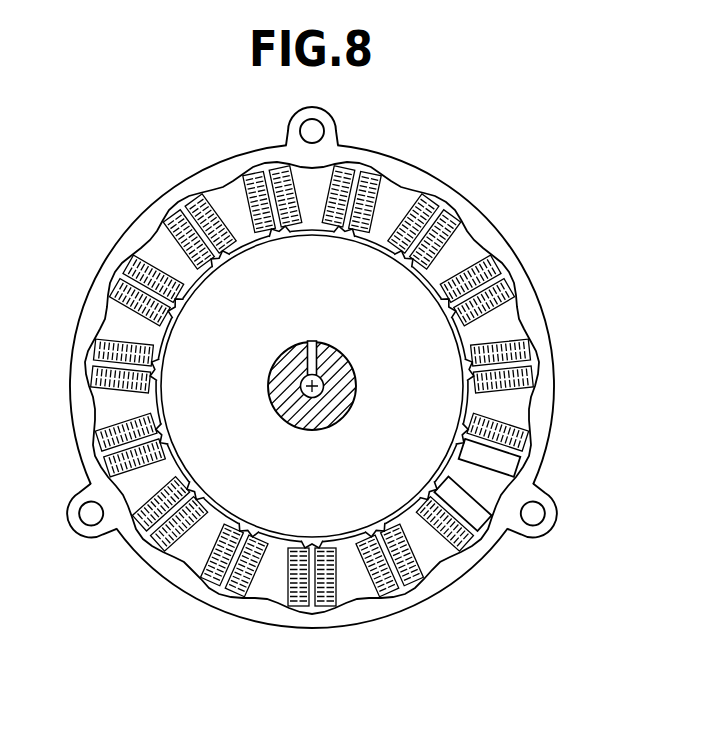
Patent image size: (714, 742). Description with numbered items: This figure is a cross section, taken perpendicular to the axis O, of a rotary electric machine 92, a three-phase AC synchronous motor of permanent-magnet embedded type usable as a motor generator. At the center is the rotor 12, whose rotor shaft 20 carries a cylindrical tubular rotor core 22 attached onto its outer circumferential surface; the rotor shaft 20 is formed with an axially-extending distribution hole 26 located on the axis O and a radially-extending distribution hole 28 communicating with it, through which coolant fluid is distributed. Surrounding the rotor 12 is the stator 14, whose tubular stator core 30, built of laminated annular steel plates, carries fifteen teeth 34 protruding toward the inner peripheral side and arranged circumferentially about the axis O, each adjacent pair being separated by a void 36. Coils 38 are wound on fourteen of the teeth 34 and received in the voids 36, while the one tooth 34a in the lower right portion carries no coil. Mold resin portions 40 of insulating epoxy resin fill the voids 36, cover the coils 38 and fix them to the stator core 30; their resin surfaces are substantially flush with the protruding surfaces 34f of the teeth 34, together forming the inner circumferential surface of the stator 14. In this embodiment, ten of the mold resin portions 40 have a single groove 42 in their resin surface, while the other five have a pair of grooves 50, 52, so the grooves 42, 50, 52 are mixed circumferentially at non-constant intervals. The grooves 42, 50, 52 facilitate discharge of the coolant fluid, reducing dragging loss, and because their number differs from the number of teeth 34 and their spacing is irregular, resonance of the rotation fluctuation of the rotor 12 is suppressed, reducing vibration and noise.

The rotary electric machine 92 is at (458, 150).
The stator 14 is at (178, 183).
The rotor 12 is at (317, 418).
The teeth 34 is at (167, 258).
The protruding surfaces 34f is at (470, 407).
The tooth 34a is at (518, 512).
The voids 36 is at (440, 235).
The coils 38 is at (262, 193).
The groove 42 is at (462, 356).
The mold resin portions 40 is at (361, 176).
The stator core 30 is at (492, 502).
The groove 50 is at (161, 435).
The groove 52 is at (167, 441).
The rotor shaft 20 is at (299, 380).
The rotor core 22 is at (226, 315).
The axially-extending distribution hole 26 is at (300, 385).
The radially-extending distribution hole 28 is at (312, 344).
The axis O is at (330, 421).